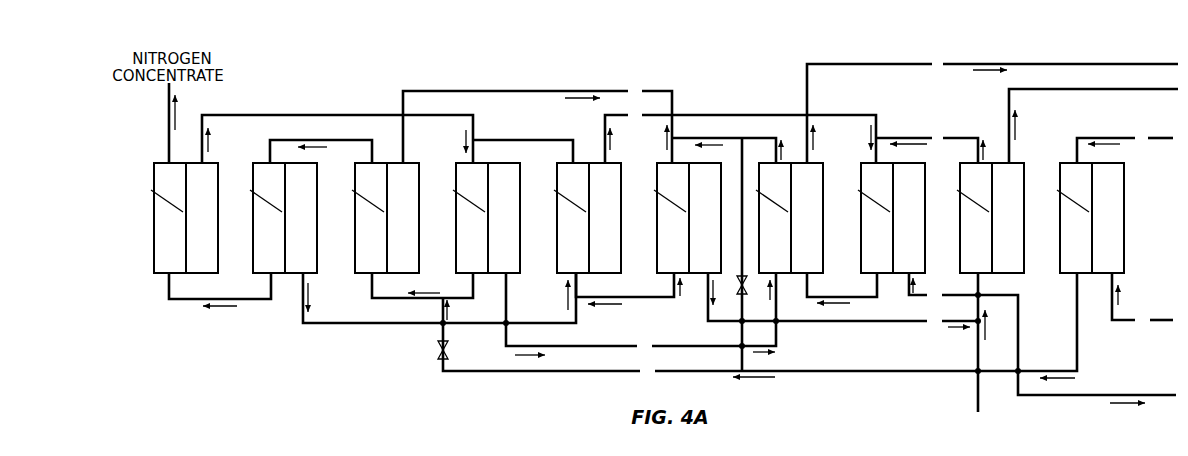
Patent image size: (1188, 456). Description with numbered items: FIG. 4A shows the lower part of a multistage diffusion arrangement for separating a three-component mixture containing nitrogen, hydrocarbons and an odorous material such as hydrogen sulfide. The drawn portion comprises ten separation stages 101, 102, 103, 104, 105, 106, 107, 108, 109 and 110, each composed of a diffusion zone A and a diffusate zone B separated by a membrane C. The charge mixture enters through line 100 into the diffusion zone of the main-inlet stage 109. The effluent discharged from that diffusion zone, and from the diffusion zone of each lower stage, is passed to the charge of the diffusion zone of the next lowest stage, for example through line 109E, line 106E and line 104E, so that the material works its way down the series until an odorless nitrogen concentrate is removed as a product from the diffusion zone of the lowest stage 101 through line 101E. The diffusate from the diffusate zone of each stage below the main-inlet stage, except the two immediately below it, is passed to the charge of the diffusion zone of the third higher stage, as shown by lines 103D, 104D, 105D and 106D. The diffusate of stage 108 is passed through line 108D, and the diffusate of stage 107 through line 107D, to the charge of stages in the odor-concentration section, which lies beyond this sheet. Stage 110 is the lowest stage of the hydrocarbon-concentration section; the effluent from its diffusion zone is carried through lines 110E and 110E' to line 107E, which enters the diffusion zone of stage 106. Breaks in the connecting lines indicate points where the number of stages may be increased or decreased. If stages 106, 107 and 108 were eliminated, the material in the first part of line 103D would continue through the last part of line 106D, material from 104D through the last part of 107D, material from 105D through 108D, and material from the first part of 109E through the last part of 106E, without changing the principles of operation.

The charge line 100 is at (980, 390).
The separation stage 101 is at (214, 274).
The separation stage 102 is at (318, 274).
The separation stage 103 is at (420, 274).
The separation stage 104 is at (520, 272).
The separation stage 105 is at (618, 272).
The separation stage 106 is at (700, 275).
The separation stage 107 is at (821, 273).
The separation stage 108 is at (923, 274).
The main-inlet stage 109 is at (1023, 274).
The separation stage 110 is at (1124, 274).
The effluent line 101E is at (168, 108).
The diffusate line 103D is at (522, 90).
The diffusate line 104D is at (507, 343).
The effluent line 104E is at (372, 298).
The diffusate line 105D is at (604, 116).
The diffusate line 106D is at (712, 323).
The effluent line 106E is at (620, 298).
The diffusate line 107D is at (805, 75).
The effluent line 107E is at (740, 138).
The diffusate line 108D is at (908, 296).
The effluent line 109E is at (928, 137).
The effluent line 110E is at (866, 337).
The effluent branch line 110E' is at (718, 254).